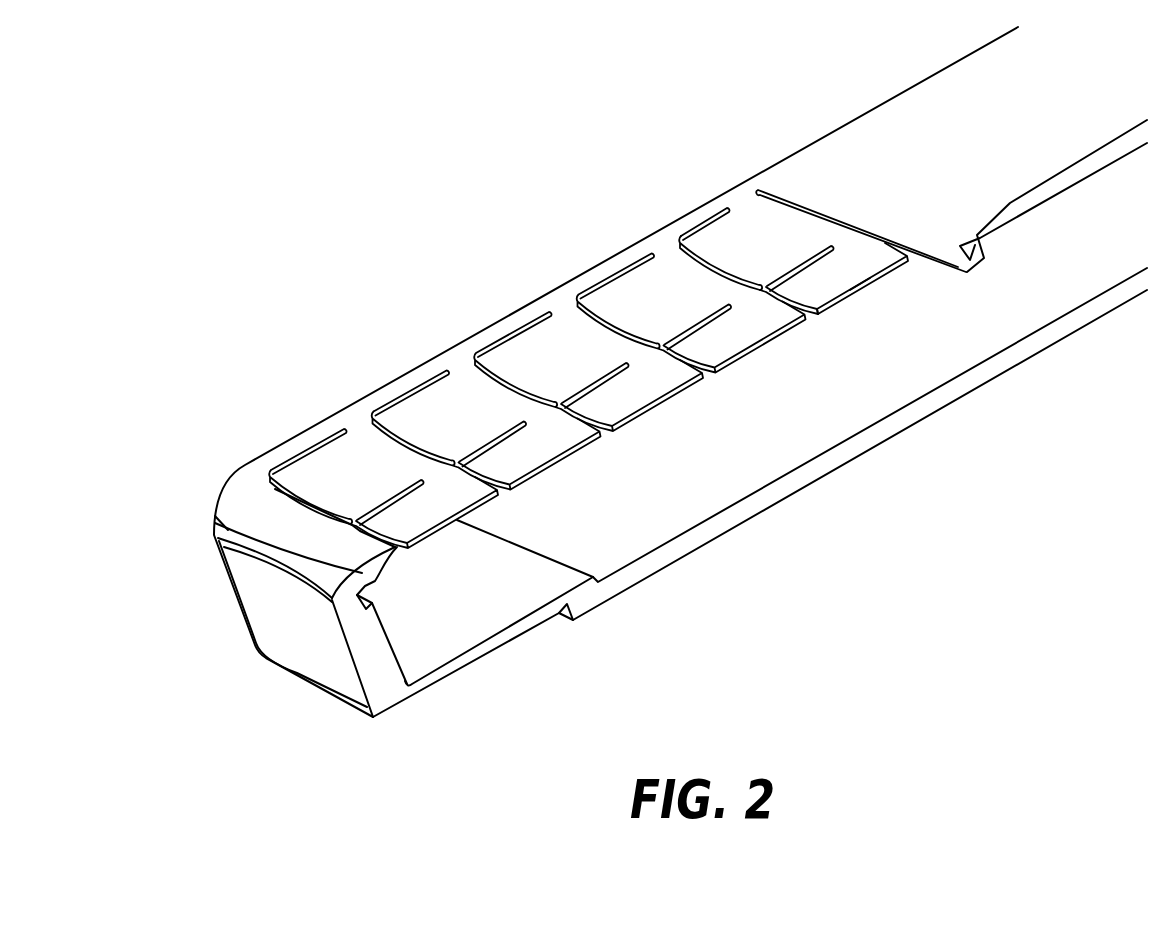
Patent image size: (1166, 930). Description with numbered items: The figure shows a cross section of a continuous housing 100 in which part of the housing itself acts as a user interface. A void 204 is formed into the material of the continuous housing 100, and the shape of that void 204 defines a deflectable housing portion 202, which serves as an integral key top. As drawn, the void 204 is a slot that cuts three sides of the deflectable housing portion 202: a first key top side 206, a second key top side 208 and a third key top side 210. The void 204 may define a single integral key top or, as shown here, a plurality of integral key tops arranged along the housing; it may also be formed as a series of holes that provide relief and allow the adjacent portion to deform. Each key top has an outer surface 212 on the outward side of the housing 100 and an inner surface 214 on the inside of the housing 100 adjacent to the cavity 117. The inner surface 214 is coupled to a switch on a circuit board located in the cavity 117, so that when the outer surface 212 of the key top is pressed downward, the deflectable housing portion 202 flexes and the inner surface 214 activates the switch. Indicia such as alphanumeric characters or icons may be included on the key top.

The continuous housing 100 is at (462, 80).
The cavity 117 is at (983, 332).
The deflectable housing portion 202 is at (551, 353).
The void 204 is at (687, 254).
The first key top side 206 is at (810, 247).
The second key top side 208 is at (776, 273).
The third key top side 210 is at (685, 213).
The outer surface 212 is at (882, 275).
The inner surface 214 is at (838, 297).